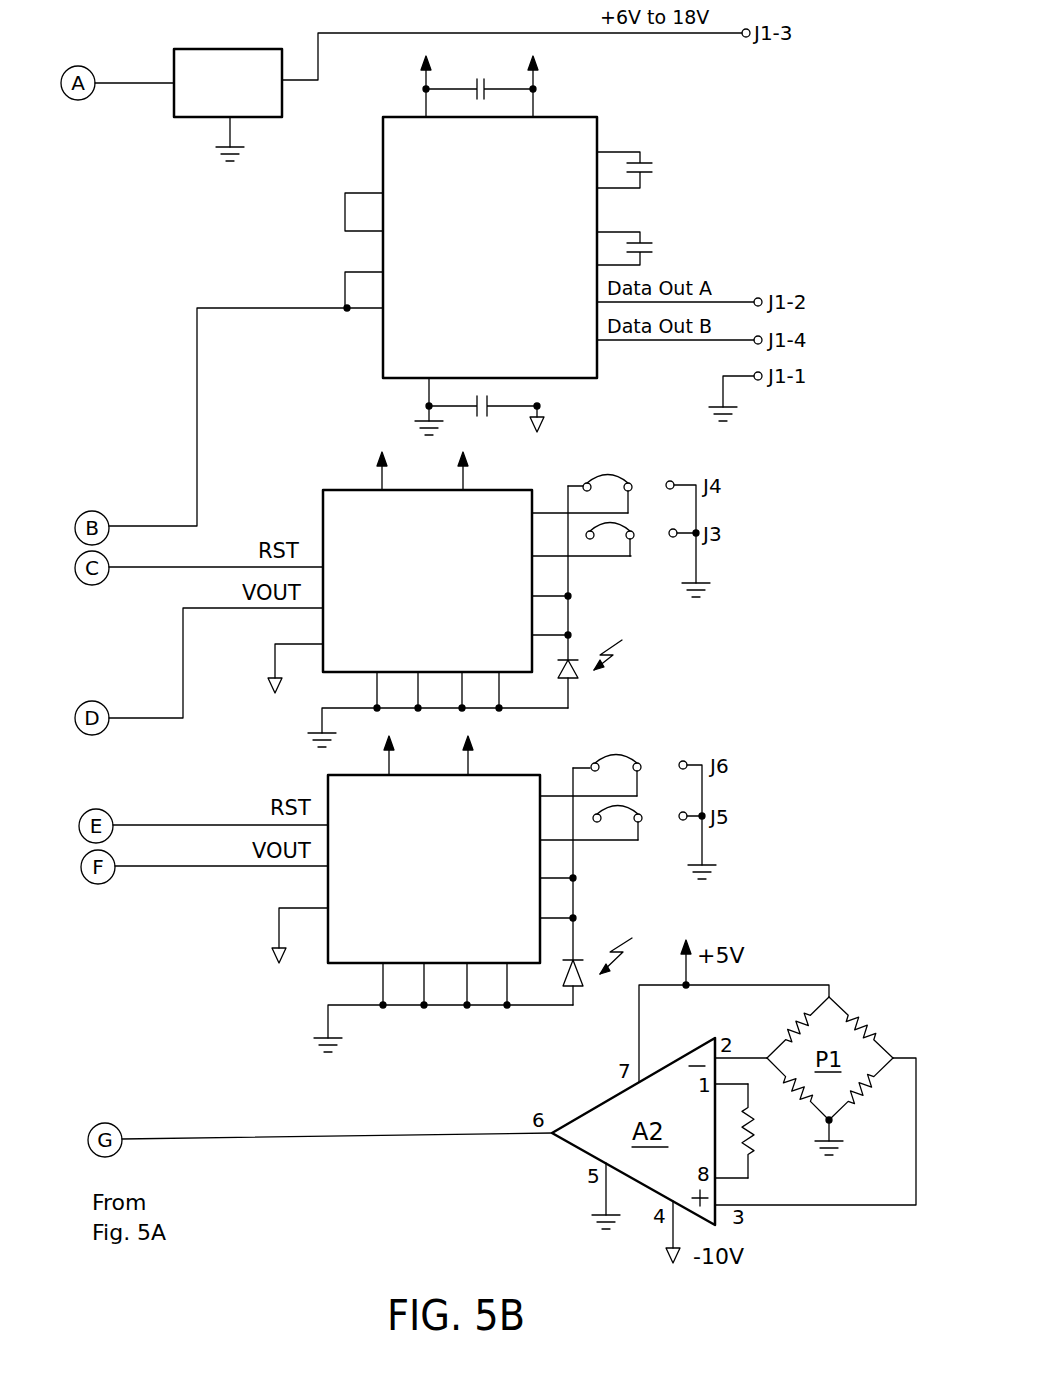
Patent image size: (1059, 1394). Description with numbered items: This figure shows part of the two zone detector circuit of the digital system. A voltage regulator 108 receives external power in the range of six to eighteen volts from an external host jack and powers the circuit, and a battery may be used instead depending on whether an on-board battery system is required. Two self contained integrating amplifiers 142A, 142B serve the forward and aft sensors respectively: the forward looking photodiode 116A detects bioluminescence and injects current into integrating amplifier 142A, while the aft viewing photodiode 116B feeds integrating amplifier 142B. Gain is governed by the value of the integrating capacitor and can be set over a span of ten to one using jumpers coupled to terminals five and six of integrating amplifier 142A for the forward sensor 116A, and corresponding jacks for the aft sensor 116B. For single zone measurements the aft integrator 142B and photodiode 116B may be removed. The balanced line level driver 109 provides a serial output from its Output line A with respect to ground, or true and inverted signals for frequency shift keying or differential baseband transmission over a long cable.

The voltage regulator 108 is at (193, 117).
The line level driver 109 is at (512, 263).
The integrating amplifier 142A is at (454, 598).
The integrating amplifier 142B is at (466, 882).
The photodiode 116A is at (581, 684).
The photodiode 116B is at (585, 956).